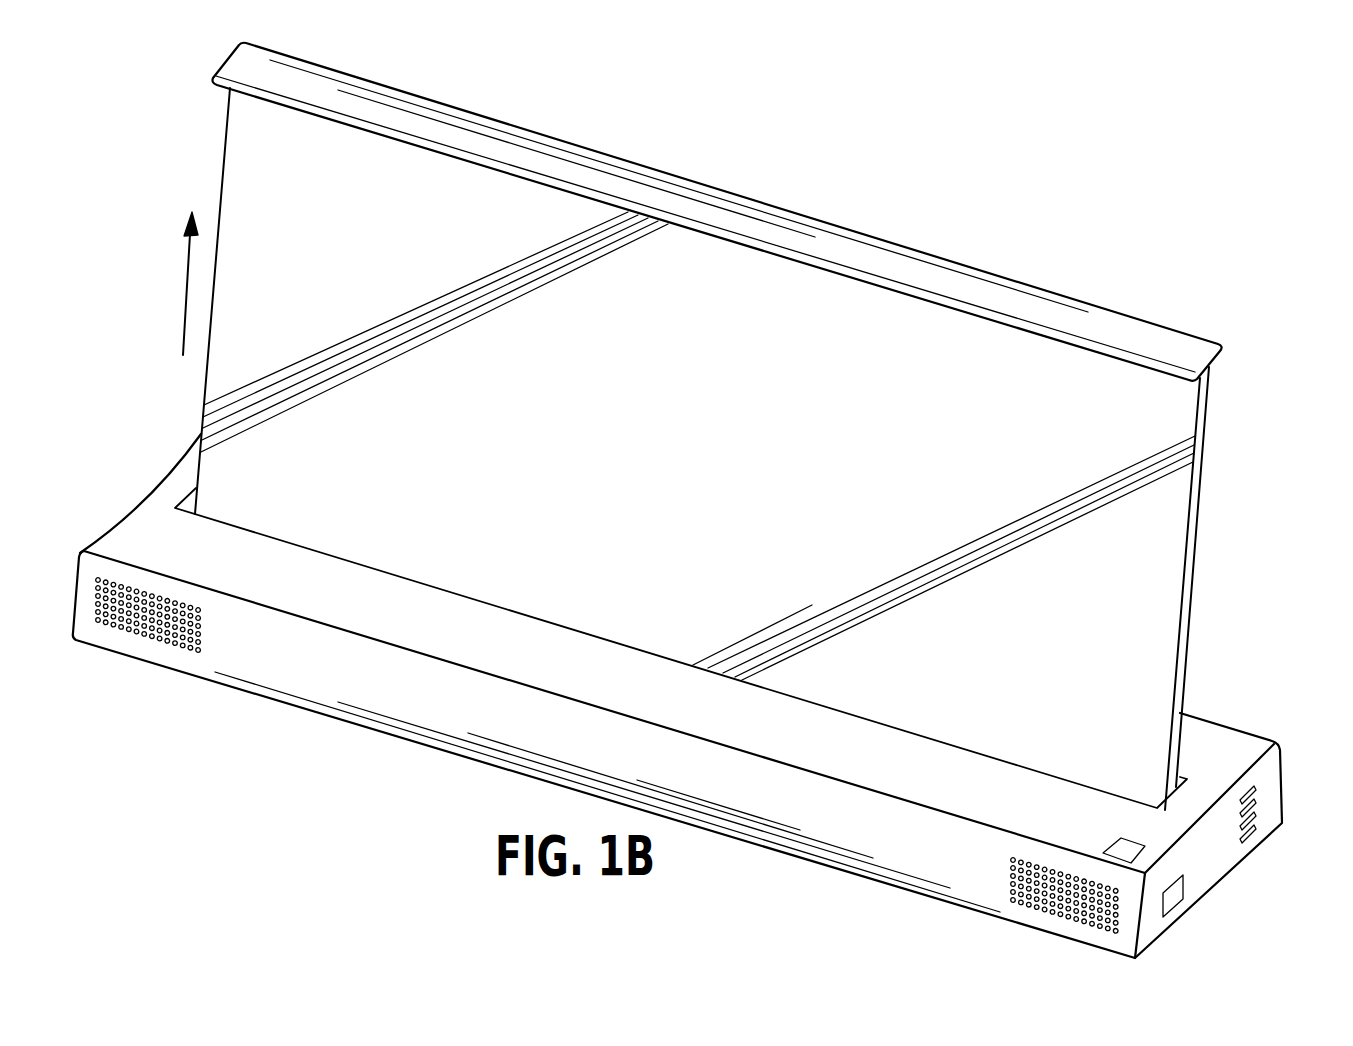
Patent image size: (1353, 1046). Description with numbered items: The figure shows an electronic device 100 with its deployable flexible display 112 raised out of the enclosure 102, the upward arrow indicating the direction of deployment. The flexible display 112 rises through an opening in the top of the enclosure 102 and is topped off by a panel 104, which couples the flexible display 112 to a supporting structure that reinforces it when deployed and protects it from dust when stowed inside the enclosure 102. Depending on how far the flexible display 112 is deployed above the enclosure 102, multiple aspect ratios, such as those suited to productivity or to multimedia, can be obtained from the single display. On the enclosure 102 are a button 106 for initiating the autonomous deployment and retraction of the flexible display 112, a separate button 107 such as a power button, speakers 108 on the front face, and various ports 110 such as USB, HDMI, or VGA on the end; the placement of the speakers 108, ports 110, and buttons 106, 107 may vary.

The electronic device 100 is at (755, 168).
The enclosure 102 is at (355, 722).
The panel 104 is at (876, 253).
The button 106 is at (1103, 850).
The separate button 107 is at (1185, 905).
The speakers 108 is at (142, 633).
The ports 110 is at (1258, 843).
The flexible display 112 is at (698, 455).